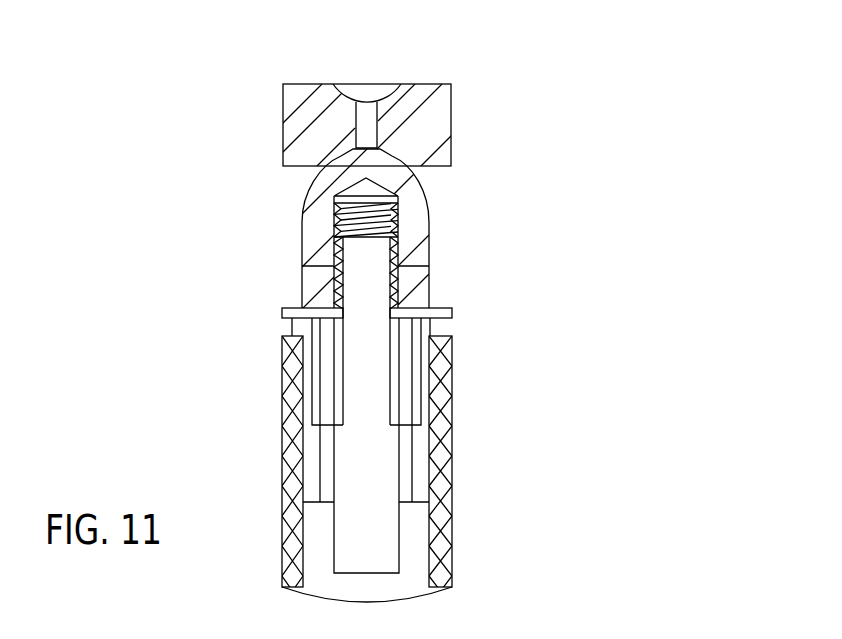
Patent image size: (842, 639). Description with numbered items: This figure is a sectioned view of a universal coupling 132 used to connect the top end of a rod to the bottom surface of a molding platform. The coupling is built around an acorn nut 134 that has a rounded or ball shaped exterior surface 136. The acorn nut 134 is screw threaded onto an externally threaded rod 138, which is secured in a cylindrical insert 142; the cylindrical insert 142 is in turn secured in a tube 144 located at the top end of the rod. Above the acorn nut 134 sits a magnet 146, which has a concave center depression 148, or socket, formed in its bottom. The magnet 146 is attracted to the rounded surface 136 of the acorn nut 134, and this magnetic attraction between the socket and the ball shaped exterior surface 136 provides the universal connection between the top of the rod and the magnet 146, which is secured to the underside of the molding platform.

The universal coupling 132 is at (434, 57).
The acorn nut 134 is at (429, 256).
The rounded exterior surface 136 is at (333, 164).
The externally threaded rod 138 is at (306, 277).
The cylindrical insert 142 is at (417, 333).
The tube 144 is at (282, 433).
The magnet 146 is at (451, 112).
The concave center depression 148 is at (361, 149).